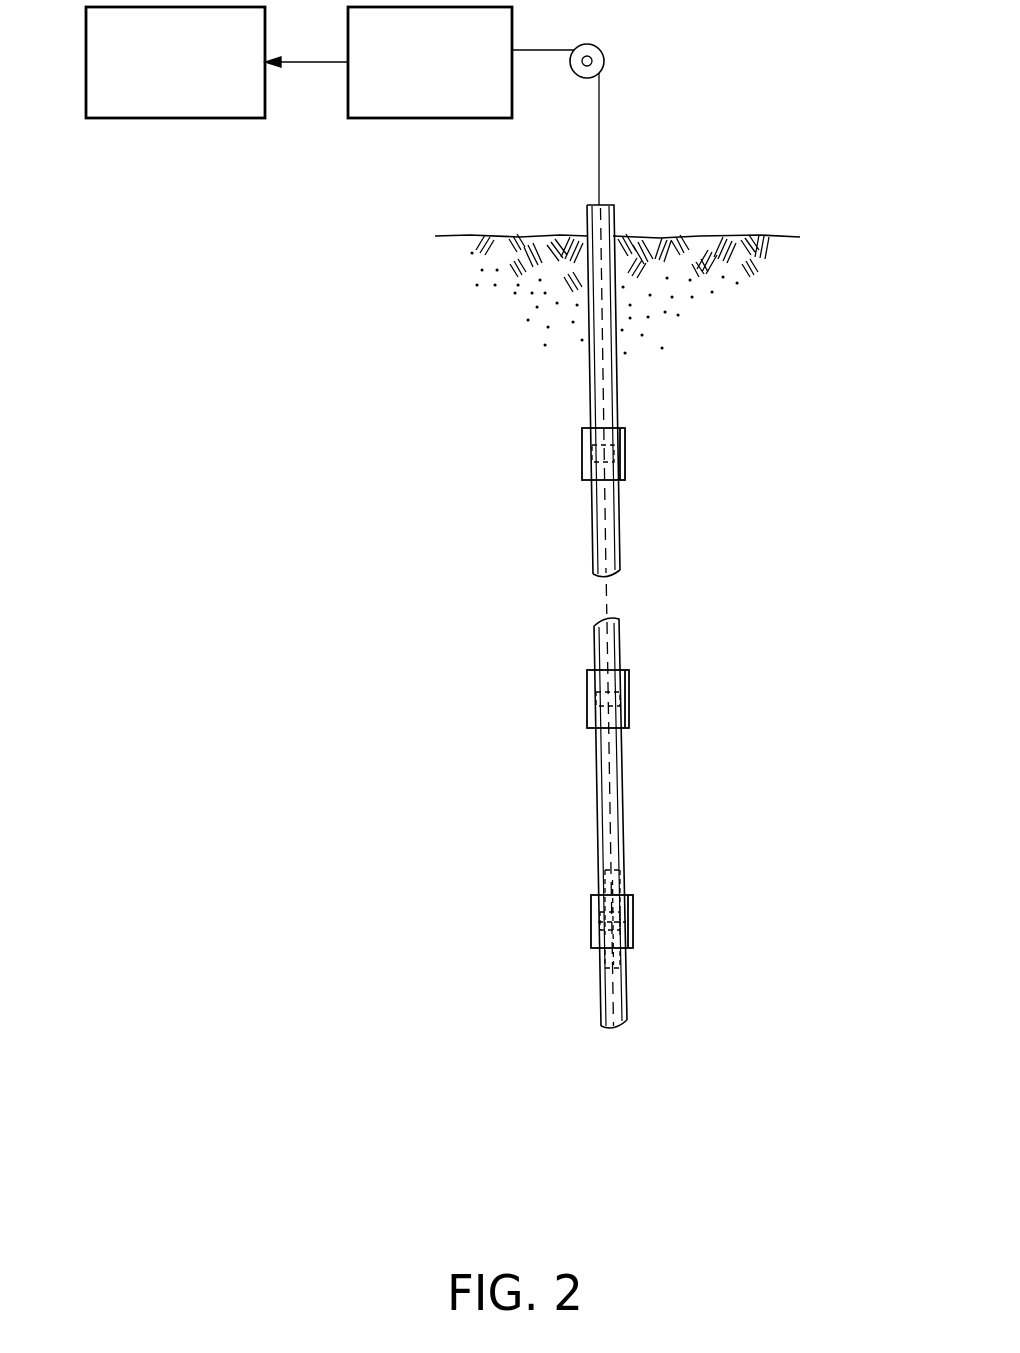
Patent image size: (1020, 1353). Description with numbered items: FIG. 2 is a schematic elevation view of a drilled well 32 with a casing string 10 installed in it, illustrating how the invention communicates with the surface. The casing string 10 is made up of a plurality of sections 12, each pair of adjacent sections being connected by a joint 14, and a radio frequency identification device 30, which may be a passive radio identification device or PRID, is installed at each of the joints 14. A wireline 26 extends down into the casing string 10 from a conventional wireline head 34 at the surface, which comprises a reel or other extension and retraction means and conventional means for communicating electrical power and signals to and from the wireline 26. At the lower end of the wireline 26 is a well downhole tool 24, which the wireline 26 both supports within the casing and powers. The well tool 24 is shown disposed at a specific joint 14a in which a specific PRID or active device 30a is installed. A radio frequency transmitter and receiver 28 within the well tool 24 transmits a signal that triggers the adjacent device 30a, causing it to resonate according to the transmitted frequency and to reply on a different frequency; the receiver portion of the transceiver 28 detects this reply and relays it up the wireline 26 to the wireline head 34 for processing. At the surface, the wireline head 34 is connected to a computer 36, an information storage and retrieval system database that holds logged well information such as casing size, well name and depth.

The well casing or pipe 10 is at (667, 983).
The section 12 is at (595, 628).
The joint 14 is at (582, 451).
The specific joint 14a is at (591, 920).
The well downhole tool 24 is at (637, 903).
The wireline 26 is at (599, 139).
The radio frequency transmitter and receiver 28 is at (613, 922).
The radio frequency identification device 30 is at (625, 454).
The specific PRID or active device 30a is at (597, 936).
The drilled well 32 is at (666, 166).
The wireline head 34 is at (447, 118).
The computer 36 is at (202, 118).